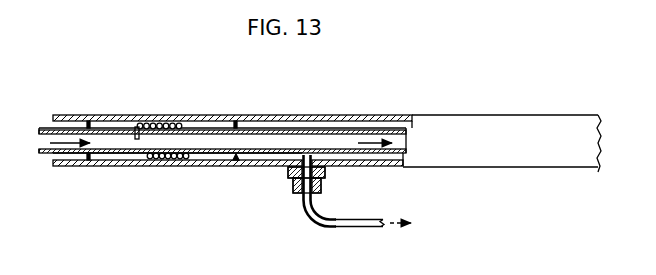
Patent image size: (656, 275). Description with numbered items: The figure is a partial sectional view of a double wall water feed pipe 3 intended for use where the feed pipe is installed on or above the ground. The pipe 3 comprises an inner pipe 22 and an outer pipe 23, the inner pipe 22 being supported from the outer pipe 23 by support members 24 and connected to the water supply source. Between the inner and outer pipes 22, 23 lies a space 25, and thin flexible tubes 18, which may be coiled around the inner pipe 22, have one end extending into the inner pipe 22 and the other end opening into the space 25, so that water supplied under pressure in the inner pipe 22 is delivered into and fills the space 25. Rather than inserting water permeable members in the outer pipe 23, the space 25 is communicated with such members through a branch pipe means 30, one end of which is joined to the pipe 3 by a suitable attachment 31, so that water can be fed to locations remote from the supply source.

The water feed pipe 3 is at (449, 113).
The thin flexible tube 18 is at (163, 125).
The inner pipe 22 is at (350, 128).
The outer pipe 23 is at (390, 116).
The support member 24 is at (90, 120).
The space 25 is at (130, 158).
The branch pipe means 30 is at (358, 232).
The attachment 31 is at (322, 187).